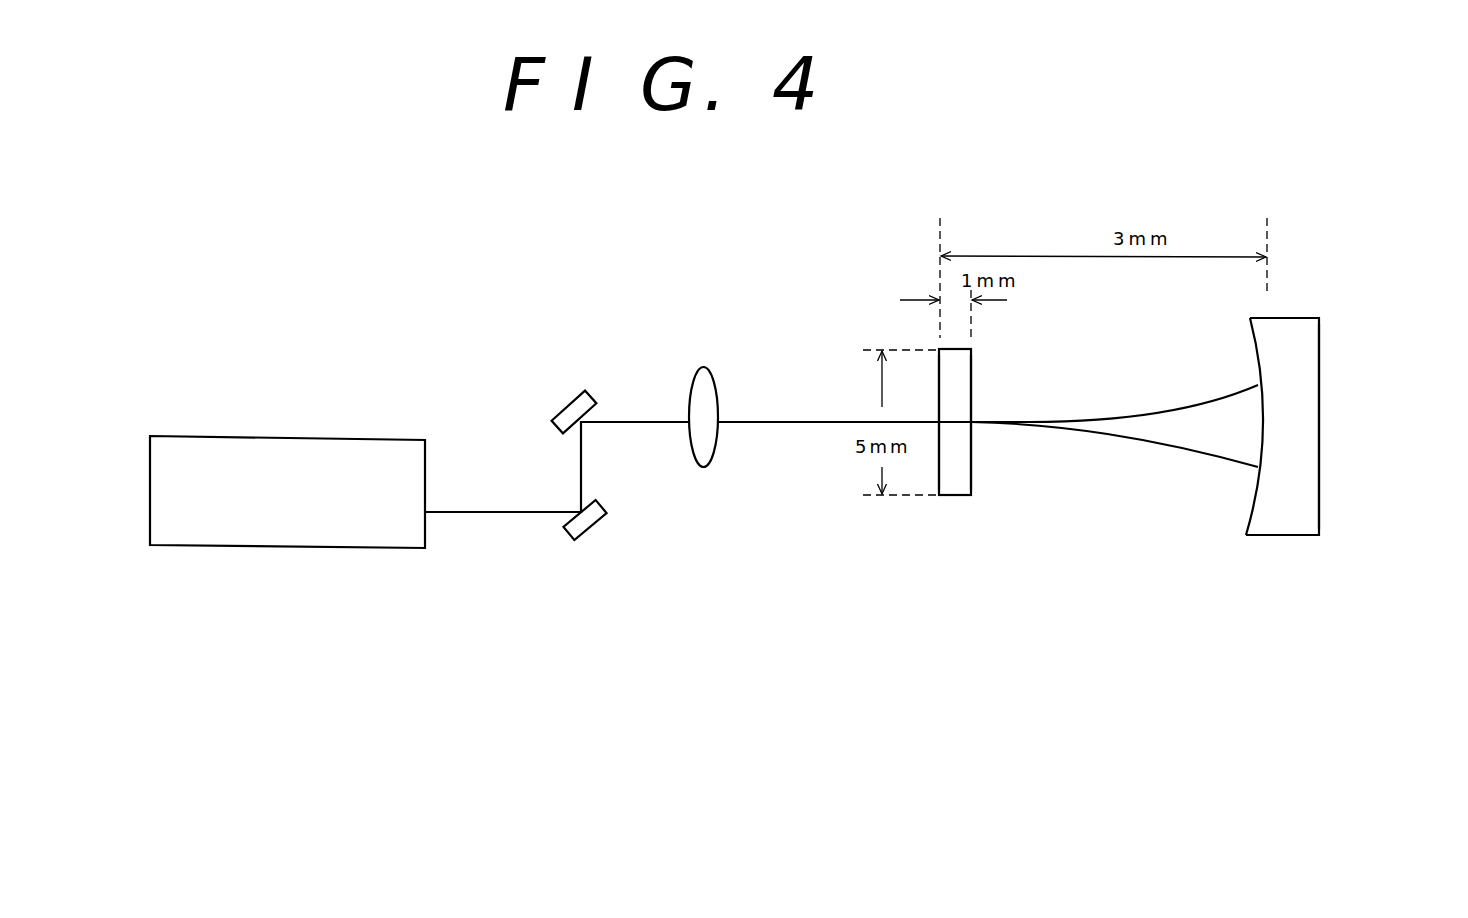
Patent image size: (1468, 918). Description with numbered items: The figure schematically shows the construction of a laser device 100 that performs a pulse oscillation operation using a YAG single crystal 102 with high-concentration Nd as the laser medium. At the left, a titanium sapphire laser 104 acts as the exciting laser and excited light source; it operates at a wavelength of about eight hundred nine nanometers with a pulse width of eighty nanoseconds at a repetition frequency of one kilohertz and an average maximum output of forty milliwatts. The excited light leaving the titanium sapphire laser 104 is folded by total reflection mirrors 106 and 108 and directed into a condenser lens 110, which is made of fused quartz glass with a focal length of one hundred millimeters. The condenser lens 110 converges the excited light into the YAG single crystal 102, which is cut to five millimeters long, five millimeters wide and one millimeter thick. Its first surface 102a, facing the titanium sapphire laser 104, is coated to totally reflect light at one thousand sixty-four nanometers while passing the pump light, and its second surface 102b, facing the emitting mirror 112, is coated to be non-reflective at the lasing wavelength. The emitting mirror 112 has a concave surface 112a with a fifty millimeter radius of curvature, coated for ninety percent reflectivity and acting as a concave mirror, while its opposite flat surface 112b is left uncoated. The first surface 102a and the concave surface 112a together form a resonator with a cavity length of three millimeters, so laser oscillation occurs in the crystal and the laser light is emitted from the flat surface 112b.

The laser device 100 is at (605, 266).
The YAG single crystal with high-concentration Nd 102 is at (953, 497).
The first surface 102a is at (938, 478).
The second surface 102b is at (972, 480).
The titanium sapphire laser 104 is at (303, 445).
The total reflection mirror 106 is at (562, 535).
The total reflection mirror 108 is at (565, 402).
The condenser lens 110 is at (690, 377).
The emitting mirror 112 is at (1292, 317).
The concave surface 112a is at (1247, 520).
The flat surface 112b is at (1322, 330).